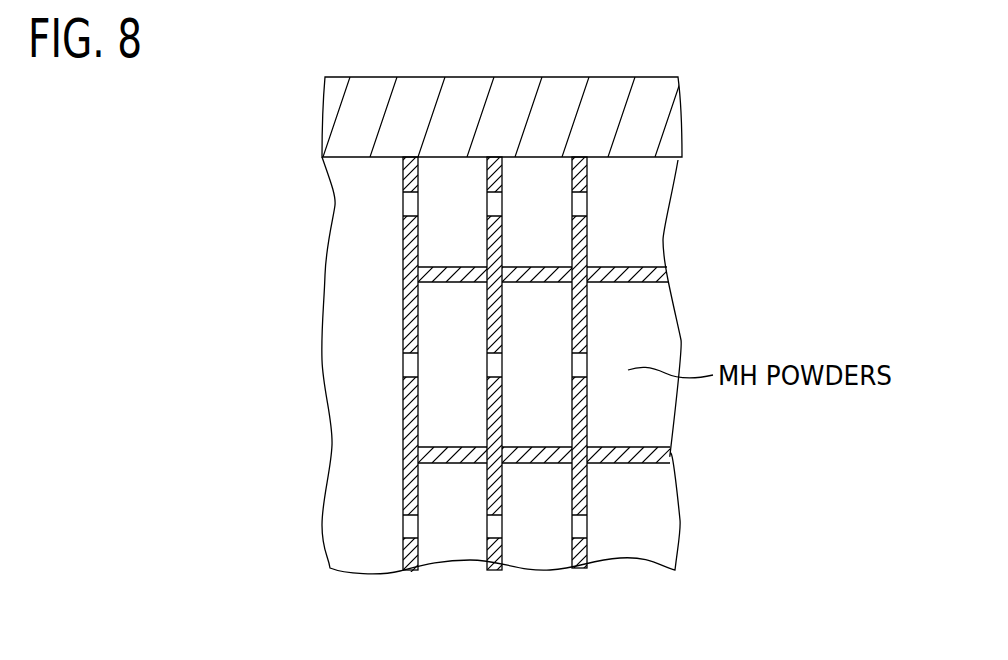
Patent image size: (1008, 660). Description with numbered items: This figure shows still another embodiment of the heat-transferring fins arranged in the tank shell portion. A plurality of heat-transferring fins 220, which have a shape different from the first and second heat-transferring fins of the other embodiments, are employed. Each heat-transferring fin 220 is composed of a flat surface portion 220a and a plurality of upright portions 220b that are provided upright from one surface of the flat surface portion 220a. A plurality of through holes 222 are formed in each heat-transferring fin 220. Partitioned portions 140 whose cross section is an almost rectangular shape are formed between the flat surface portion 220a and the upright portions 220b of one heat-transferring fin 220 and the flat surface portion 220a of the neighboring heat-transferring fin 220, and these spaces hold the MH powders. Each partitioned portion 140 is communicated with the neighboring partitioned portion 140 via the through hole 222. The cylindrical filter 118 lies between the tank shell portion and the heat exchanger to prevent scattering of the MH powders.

The cylindrical filter 118 is at (622, 77).
The heat-transferring fin 220 is at (471, 367).
The flat surface portion 220a is at (402, 258).
The upright portion 220b is at (443, 283).
The through hole 222 is at (403, 198).
The partitioned portion 140 is at (449, 421).